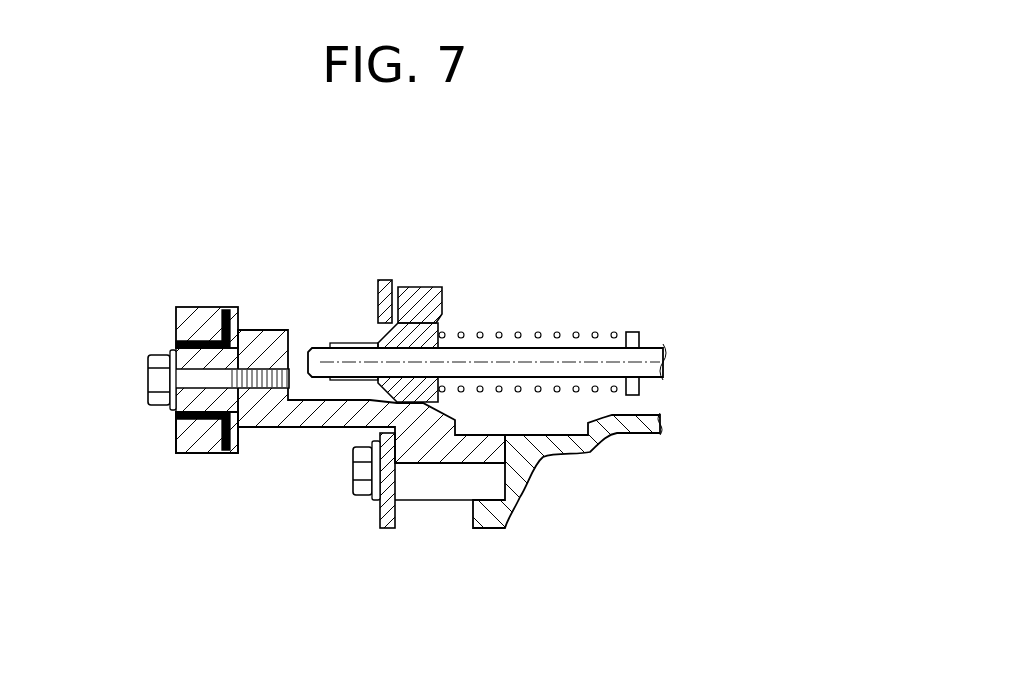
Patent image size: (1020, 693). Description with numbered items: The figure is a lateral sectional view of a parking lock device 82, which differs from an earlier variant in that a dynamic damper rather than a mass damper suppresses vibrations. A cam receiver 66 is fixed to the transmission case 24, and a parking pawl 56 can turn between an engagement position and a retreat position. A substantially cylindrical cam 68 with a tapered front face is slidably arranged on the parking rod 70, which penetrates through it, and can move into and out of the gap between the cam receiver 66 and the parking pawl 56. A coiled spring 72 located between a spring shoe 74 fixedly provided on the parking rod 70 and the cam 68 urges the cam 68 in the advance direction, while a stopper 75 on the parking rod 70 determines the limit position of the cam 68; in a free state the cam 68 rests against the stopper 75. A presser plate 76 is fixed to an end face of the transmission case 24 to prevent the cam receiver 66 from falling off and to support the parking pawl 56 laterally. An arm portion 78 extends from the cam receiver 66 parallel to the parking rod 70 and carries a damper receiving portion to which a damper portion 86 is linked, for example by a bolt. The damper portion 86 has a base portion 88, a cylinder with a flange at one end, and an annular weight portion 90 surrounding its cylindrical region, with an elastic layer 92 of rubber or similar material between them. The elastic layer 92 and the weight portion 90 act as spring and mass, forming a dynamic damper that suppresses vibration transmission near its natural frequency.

The transmission case 24 is at (413, 500).
The parking pawl 56 is at (442, 290).
The cam receiver 66 is at (468, 457).
The cam 68 is at (442, 322).
The parking rod 70 is at (580, 355).
The spring 72 is at (557, 333).
The spring shoe 74 is at (640, 335).
The stopper 75 is at (335, 343).
The presser plate 76 is at (378, 283).
The arm portion 78 is at (299, 418).
The parking lock device 82 is at (543, 230).
The damper portion 86 is at (193, 456).
The base portion 88 is at (163, 350).
The weight portion 90 is at (205, 307).
The elastic layer 92 is at (175, 307).